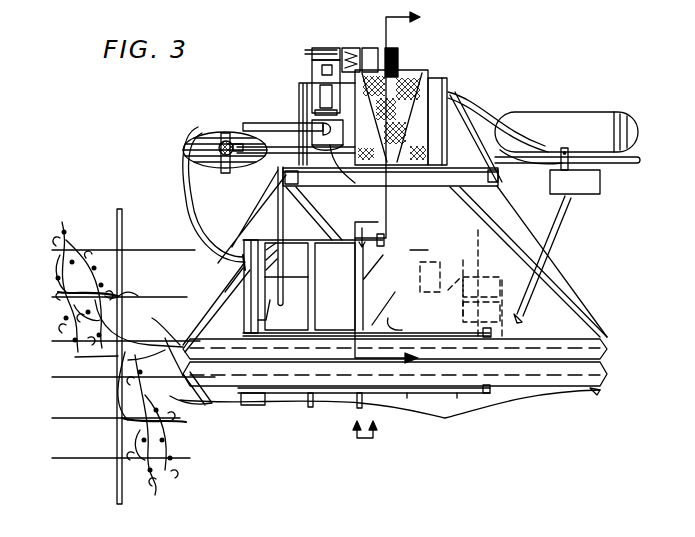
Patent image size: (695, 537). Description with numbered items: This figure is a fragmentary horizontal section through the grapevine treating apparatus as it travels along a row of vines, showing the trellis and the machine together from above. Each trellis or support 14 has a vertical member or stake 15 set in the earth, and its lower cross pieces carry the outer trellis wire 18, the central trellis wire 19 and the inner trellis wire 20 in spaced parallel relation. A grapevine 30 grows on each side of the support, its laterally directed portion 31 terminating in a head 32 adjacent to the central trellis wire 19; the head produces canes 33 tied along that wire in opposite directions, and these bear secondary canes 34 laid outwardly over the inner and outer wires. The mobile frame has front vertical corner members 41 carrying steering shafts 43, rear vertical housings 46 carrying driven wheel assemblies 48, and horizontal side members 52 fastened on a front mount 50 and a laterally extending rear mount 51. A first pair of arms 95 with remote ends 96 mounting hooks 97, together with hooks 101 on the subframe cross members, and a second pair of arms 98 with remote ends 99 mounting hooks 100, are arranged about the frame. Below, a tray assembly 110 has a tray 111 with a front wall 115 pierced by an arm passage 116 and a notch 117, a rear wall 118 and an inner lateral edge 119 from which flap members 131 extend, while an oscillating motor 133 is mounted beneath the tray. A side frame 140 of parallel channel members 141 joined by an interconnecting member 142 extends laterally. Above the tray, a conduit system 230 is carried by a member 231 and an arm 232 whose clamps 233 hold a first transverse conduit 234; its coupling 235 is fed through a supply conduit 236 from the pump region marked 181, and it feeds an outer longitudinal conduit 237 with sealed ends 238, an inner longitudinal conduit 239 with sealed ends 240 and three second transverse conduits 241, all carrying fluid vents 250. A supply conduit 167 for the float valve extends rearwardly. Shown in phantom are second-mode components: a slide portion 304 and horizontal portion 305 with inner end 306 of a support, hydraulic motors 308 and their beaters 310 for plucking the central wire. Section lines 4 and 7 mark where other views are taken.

The trellis or support 14 is at (100, 367).
The outer trellis wire 18 is at (140, 250).
The central trellis wire 19 is at (175, 297).
The inner trellis wire 20 is at (122, 345).
The secondary canes 34 is at (66, 235).
The canes 33 is at (58, 292).
The head 32 is at (122, 296).
The upper, laterally directed portion 31 is at (118, 320).
The grapevine 30 is at (103, 367).
The vertical member or stake 15 is at (88, 359).
The flap members 131 is at (197, 403).
The supply conduit 236 is at (187, 186).
The front wall 115 is at (244, 217).
The first pair of arms 95 is at (227, 275).
The arm passage 116 is at (282, 180).
The notch 117 is at (238, 266).
The coupling 235 is at (236, 276).
The clamps 233 is at (244, 283).
The first transverse conduit 234 is at (255, 319).
The steering shafts 43 is at (225, 164).
The front vertical corner members 41 is at (222, 142).
The front mount 50 is at (240, 144).
The parallel channel members 141 is at (340, 100).
The interconnecting member 142 is at (398, 72).
The side frame 140 is at (447, 75).
The section line 4- 4 is at (398, 190).
The slide portion 304 is at (480, 178).
The hose 181 is at (352, 167).
The hooks 101 is at (446, 262).
The outer longitudinal conduit 237 is at (315, 232).
The remote ends 96 is at (288, 286).
The member 231 is at (278, 262).
The hooks 97 is at (284, 303).
The fluid ports or vents 250 is at (312, 312).
The second transverse conduits 241 is at (335, 286).
The conduit system 230 is at (362, 232).
The sealed ends 238 is at (388, 236).
The tray 111 is at (440, 412).
The inner longitudinal conduit 239 is at (399, 320).
The arm 232 is at (395, 348).
The sealed ends 240 is at (258, 333).
The inner end 306 is at (488, 338).
The tray assemblies 110 is at (572, 292).
The inner lateral edge 119 is at (600, 336).
The oscillating motor 133 is at (442, 268).
The flexible tubes or beaters 310 is at (465, 299).
The hydraulic motors 308 is at (468, 227).
The rear wall 118 is at (516, 237).
The horizontal portion 305 is at (508, 264).
The second pair of arms 98 is at (576, 224).
The remote ends 99 is at (533, 311).
The hooks 100 is at (538, 327).
The driven wheel assemblies 48 is at (578, 112).
The horizontal side members 52 is at (547, 146).
The rear mount 51 is at (566, 148).
The rear vertical housings 46 is at (585, 191).
The supply conduit 167 is at (612, 165).
The section 7- 7 is at (362, 447).